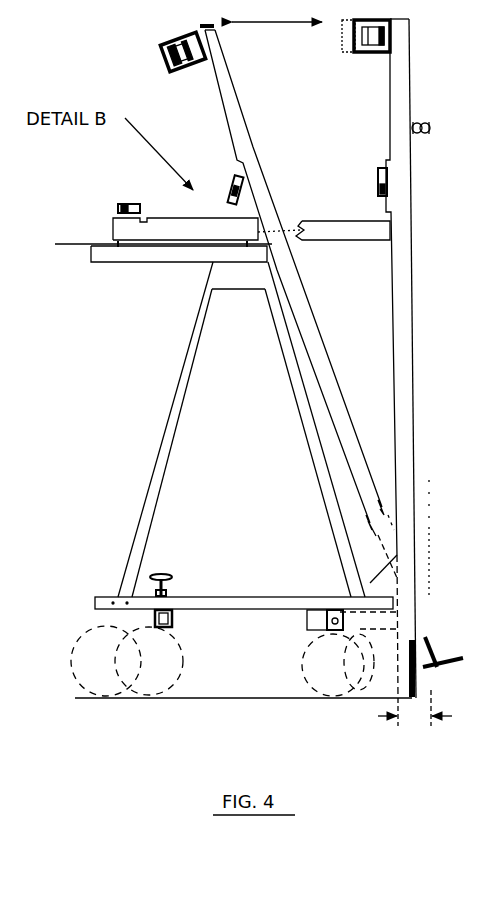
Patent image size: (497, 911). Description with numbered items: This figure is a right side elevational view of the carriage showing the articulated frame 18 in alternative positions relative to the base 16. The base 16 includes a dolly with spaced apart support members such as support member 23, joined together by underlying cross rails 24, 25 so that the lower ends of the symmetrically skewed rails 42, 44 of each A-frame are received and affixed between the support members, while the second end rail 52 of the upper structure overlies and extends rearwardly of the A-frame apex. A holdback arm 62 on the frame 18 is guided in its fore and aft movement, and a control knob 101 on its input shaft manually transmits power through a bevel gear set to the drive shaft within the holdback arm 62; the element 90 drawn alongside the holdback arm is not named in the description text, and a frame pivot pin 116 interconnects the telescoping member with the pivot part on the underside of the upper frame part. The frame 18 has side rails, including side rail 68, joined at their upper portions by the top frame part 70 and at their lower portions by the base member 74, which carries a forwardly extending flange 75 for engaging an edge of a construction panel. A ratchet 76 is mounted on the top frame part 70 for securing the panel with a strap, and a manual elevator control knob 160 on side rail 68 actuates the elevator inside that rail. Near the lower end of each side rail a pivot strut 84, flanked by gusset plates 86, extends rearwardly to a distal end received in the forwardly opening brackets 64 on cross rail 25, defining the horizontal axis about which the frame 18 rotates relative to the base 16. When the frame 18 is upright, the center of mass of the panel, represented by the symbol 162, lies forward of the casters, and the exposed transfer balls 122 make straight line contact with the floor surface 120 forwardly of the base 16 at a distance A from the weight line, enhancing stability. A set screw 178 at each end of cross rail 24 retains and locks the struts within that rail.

The base 16 is at (170, 368).
The articulated frame 18 is at (204, 100).
The support member 23 is at (233, 603).
The cross rail 24 is at (173, 626).
The cross rail 25 is at (306, 628).
The skewed rail 42 is at (314, 440).
The skewed rail 44 is at (163, 440).
The second end rail 52 is at (155, 259).
The holdback arm 62 is at (193, 229).
The bracket 64 is at (320, 608).
The side rail 68 is at (406, 325).
The top frame part 70 is at (200, 26).
The base member 74 is at (444, 641).
The flange 75 is at (443, 675).
The ratchet 76 is at (356, 57).
The pivot strut 84 is at (346, 597).
The gusset plate 86 is at (388, 583).
The guide rod 90 is at (153, 244).
The control knob 101 is at (118, 208).
The frame pivot pin 116 is at (283, 230).
The floor surface 120 is at (248, 703).
The transfer ball 122 is at (397, 699).
The elevator control knob 160 is at (380, 180).
The center of mass symbol 162 is at (414, 128).
The set screw 178 is at (153, 573).